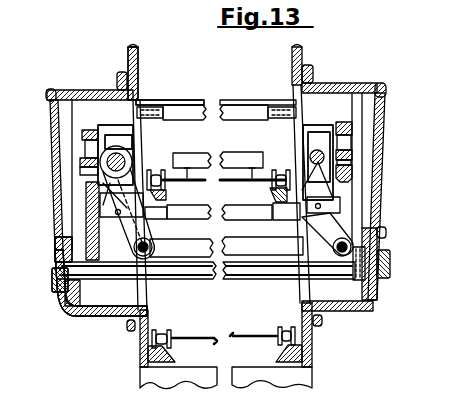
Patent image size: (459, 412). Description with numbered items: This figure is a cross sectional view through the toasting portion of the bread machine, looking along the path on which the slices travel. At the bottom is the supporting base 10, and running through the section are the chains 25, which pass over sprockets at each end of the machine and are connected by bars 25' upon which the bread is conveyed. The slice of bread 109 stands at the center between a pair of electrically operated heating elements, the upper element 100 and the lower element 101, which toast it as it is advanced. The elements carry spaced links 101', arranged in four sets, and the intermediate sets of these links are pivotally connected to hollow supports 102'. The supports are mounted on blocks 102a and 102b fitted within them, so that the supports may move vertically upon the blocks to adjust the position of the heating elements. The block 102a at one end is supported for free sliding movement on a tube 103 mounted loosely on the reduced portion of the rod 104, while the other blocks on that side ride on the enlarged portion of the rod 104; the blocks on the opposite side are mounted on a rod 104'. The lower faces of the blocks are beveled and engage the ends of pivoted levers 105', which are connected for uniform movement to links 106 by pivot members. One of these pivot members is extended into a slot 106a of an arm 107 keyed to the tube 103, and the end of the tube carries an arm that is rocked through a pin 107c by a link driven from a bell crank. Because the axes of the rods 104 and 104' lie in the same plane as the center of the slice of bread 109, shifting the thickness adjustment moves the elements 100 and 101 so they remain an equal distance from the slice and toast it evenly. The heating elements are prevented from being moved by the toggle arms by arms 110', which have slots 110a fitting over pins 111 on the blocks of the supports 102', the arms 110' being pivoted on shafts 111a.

The supporting base 10 is at (140, 53).
The chains 25 is at (182, 244).
The bars 25' is at (257, 256).
The upper heating element 100 is at (180, 111).
The lower heating element 101 is at (178, 205).
The links 101' is at (216, 118).
The hollow supports 102' is at (215, 132).
The block 102a is at (110, 133).
The block 102b is at (318, 134).
The tube 103 is at (100, 172).
The rod 104 is at (59, 221).
The rod 104' is at (373, 169).
The pivoted levers 105' is at (185, 219).
The links 106 is at (234, 247).
The slot 106a is at (151, 243).
The arm 107 is at (110, 199).
The pin 107c is at (147, 273).
The slice of bread 109 is at (230, 160).
The arms 110' is at (46, 264).
The slots 110a is at (88, 135).
The pins 111 is at (88, 160).
The shafts 111a is at (118, 310).